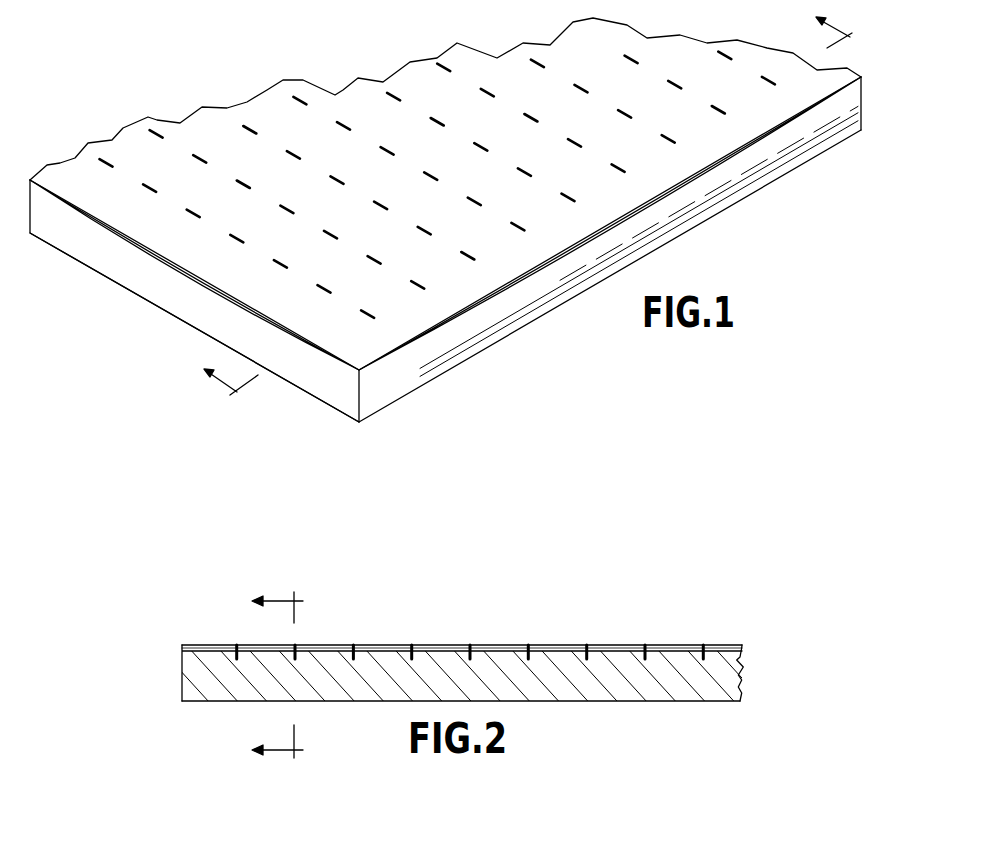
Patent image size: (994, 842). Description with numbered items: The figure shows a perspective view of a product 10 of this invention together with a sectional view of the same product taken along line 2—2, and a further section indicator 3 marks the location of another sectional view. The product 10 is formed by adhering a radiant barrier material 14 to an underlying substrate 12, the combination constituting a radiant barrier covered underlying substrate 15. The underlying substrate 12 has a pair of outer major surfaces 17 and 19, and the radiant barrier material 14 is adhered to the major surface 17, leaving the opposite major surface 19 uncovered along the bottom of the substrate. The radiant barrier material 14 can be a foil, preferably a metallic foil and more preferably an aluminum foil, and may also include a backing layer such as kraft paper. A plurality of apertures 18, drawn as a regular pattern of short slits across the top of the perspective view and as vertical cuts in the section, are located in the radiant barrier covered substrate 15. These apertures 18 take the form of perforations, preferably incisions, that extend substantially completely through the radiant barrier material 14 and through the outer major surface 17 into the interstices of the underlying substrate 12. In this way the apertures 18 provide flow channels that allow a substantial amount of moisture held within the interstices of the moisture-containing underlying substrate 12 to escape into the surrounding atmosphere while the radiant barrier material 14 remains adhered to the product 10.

In FIG. 1, the product 10 is at (124, 97).
In FIG. 2, the product 10 is at (213, 620).
In FIG. 1, the underlying substrate 12 is at (517, 290).
In FIG. 2, the underlying substrate 12 is at (742, 660).
In FIG. 1, the radiant barrier material 14 is at (200, 251).
In FIG. 2, the radiant barrier material 14 is at (497, 645).
In FIG. 1, the radiant barrier covered underlying substrate 15 is at (750, 168).
In FIG. 1, the outer major surface 17 is at (460, 311).
In FIG. 2, the outer major surface 17 is at (670, 647).
In FIG. 1, the apertures 18 is at (200, 157).
In FIG. 2, the apertures 18 is at (360, 648).
In FIG. 1, the outer major surface 19 is at (490, 347).
In FIG. 2, the outer major surface 19 is at (658, 702).
In FIG. 1, the section line 2— 2 is at (540, 216).
In FIG. 2, the section line 3- 3 is at (277, 676).